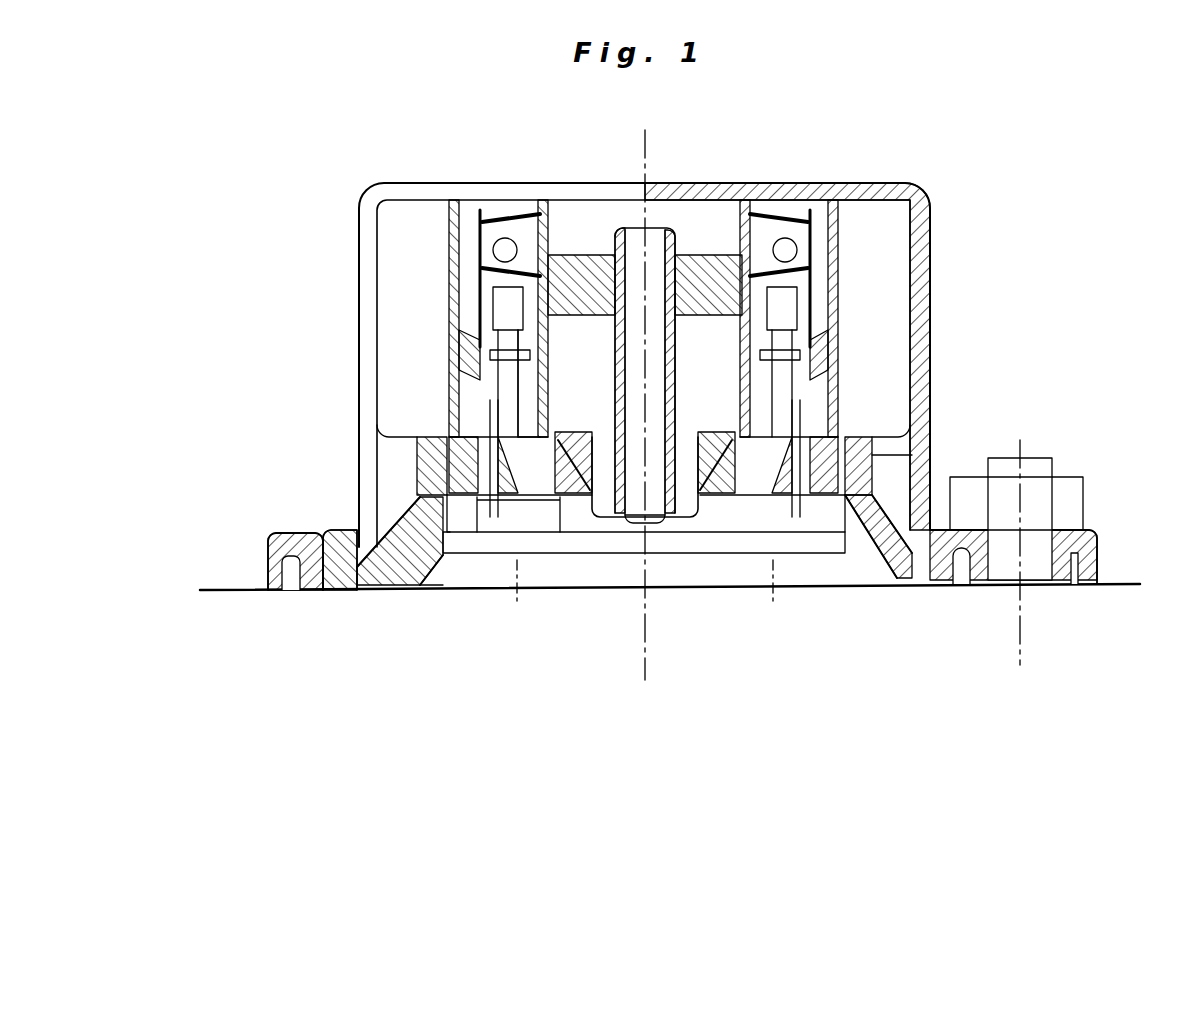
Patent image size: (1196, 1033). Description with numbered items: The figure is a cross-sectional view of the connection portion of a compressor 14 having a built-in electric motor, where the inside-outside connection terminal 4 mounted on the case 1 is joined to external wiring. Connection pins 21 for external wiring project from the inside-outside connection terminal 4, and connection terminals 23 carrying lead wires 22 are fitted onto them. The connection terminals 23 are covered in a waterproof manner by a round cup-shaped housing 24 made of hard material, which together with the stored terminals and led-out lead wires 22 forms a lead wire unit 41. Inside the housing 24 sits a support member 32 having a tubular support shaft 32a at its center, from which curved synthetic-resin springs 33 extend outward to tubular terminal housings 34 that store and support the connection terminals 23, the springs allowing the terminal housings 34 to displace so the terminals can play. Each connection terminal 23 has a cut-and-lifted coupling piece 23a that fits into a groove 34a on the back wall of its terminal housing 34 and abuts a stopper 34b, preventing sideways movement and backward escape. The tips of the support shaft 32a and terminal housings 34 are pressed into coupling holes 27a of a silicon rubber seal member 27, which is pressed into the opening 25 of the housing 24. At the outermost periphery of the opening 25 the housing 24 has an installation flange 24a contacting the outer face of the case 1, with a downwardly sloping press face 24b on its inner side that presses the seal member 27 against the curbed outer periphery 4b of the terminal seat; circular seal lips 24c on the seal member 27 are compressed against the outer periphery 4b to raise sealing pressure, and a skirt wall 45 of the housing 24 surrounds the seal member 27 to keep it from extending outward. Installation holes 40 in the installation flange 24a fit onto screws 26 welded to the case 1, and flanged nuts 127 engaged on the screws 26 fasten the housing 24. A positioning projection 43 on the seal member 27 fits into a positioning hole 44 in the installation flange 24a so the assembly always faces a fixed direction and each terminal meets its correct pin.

The case 1 is at (225, 590).
The inside-outside connection terminal 4 is at (601, 573).
The outer periphery 4b is at (917, 455).
The compressor 14 is at (1118, 575).
The connection pin for external wiring 21 is at (588, 300).
The lead wire 22 is at (508, 300).
The connection terminal 23 is at (565, 302).
The coupling piece 23a is at (462, 374).
The housing 24 is at (935, 372).
The installation flange 24a is at (298, 541).
The press face 24b is at (420, 495).
The seal lip 24c is at (443, 570).
The opening 25 is at (455, 522).
The screw 26 is at (1052, 460).
The seal member 27 is at (390, 590).
The coupling hole 27a is at (515, 470).
The support member 32 is at (683, 225).
The support shaft 32a is at (677, 335).
The synthetic-resin spring 33 is at (712, 285).
The terminal housing 34 is at (450, 280).
The groove 34a is at (470, 266).
The stopper 34b is at (450, 335).
The installation hole 40 is at (1043, 560).
The lead wire unit 41 is at (945, 238).
The positioning projection 43 is at (337, 540).
The positioning hole 44 is at (325, 592).
The skirt wall 45 is at (290, 592).
The flanged nut 127 is at (1083, 490).